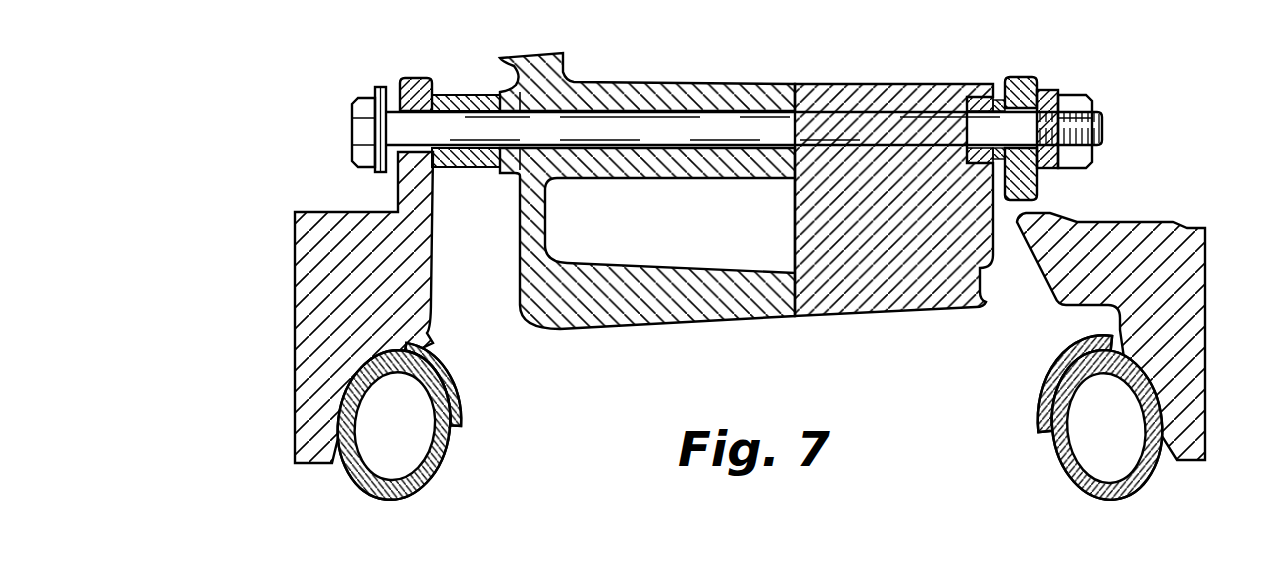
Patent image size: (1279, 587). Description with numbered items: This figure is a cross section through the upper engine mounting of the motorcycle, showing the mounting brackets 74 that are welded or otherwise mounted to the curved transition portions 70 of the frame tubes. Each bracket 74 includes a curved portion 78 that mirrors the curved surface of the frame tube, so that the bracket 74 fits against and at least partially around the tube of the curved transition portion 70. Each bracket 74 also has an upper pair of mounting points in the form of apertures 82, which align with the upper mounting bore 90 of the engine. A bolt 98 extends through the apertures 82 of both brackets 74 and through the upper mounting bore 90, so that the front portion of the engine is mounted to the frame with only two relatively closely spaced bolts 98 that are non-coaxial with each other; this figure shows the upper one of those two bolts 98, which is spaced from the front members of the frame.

The curved transition portion 70 is at (440, 447).
The mounting bracket 74 is at (306, 282).
The curved portion 78 is at (448, 378).
The aperture 82 is at (425, 114).
The upper mounting bore 90 is at (640, 114).
The bolt 98 is at (841, 125).